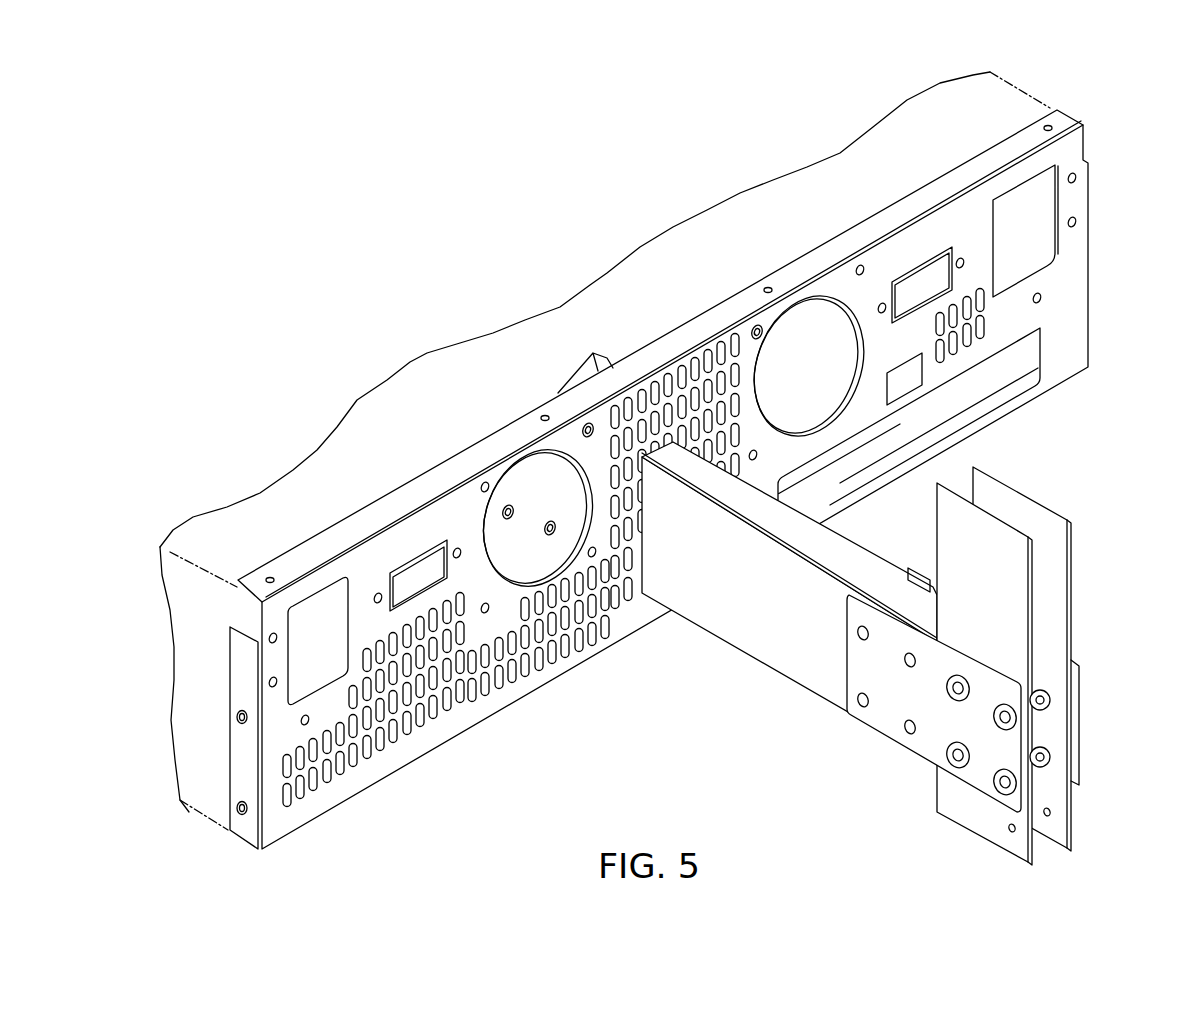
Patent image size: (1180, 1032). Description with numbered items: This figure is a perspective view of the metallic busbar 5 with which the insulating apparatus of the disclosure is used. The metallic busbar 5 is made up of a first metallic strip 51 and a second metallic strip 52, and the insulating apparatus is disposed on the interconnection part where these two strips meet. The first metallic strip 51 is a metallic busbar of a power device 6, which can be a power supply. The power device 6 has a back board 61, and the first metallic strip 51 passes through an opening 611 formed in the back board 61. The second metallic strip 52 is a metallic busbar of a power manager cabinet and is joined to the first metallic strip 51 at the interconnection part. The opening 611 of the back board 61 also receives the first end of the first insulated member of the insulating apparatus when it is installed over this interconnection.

The power device 6 is at (1027, 92).
The back board 61 is at (1074, 271).
The opening 611 is at (692, 370).
The metallic busbar 5 is at (860, 653).
The first metallic strip 51 is at (740, 627).
The second metallic strip 52 is at (967, 805).